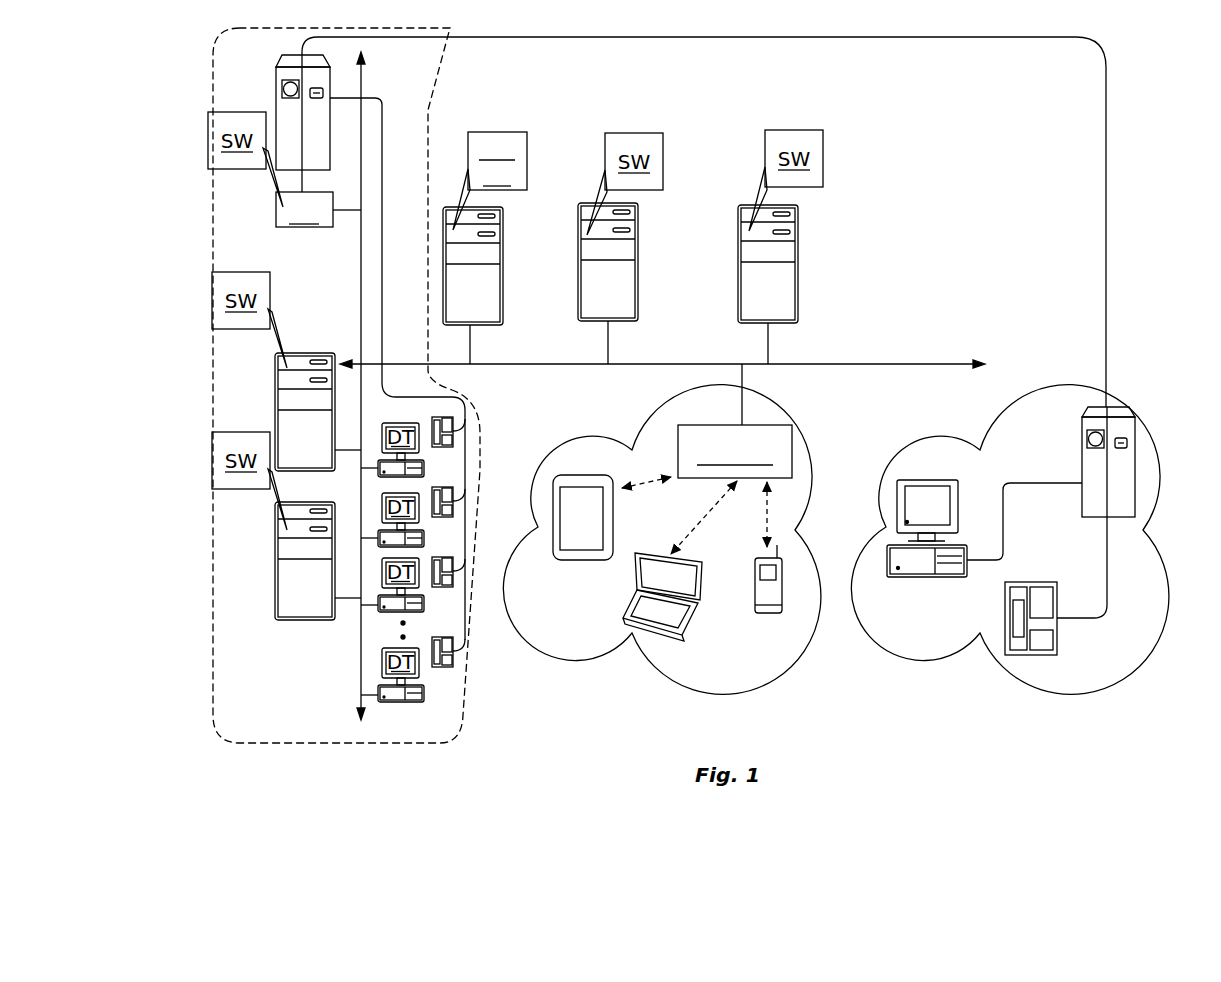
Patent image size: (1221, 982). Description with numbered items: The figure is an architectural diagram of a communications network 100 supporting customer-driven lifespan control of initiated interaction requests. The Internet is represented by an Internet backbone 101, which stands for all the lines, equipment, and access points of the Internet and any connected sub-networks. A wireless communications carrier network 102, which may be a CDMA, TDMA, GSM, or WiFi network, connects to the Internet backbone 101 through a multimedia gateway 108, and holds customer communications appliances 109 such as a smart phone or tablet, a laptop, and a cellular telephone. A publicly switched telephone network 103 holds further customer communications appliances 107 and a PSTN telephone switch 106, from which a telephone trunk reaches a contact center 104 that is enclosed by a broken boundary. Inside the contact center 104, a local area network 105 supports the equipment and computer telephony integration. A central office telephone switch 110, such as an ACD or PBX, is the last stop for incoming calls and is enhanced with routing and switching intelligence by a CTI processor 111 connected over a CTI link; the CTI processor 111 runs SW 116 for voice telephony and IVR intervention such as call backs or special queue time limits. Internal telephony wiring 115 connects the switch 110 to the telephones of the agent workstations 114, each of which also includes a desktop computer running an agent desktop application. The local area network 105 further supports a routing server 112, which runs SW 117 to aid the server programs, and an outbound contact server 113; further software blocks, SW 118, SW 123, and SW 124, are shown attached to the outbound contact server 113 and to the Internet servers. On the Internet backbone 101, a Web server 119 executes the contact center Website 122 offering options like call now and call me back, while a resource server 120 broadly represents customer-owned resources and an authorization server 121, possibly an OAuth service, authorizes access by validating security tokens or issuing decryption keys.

The communications network 100 is at (1157, 201).
The Internet backbone 101 is at (847, 364).
The wireless communications carrier network 102 is at (632, 450).
The publicly switched telephone network (PSTN) 103 is at (980, 450).
The contact center 104 is at (480, 463).
The local area network (LAN) 105 is at (361, 312).
The PSTN telephone switch 106 is at (1082, 458).
The communications appliance 107 is at (941, 608).
The multimedia gateway 108 is at (725, 425).
The communications appliances 109 is at (603, 598).
The central office telephone switch 110 is at (276, 98).
The CTI processor 111 is at (276, 210).
The routing server 112 is at (275, 403).
The outbound contact server 113 is at (275, 558).
The agent workstations 114 is at (348, 652).
The internal telephony wiring 115 is at (382, 117).
The SW 116 is at (208, 157).
The SW 117 is at (212, 313).
The software 118 is at (212, 467).
The Web server 119 is at (503, 255).
The resource server 120 is at (638, 258).
The authorization server 121 is at (798, 253).
The Website 122 is at (527, 158).
The software 123 is at (663, 163).
The software 124 is at (823, 157).